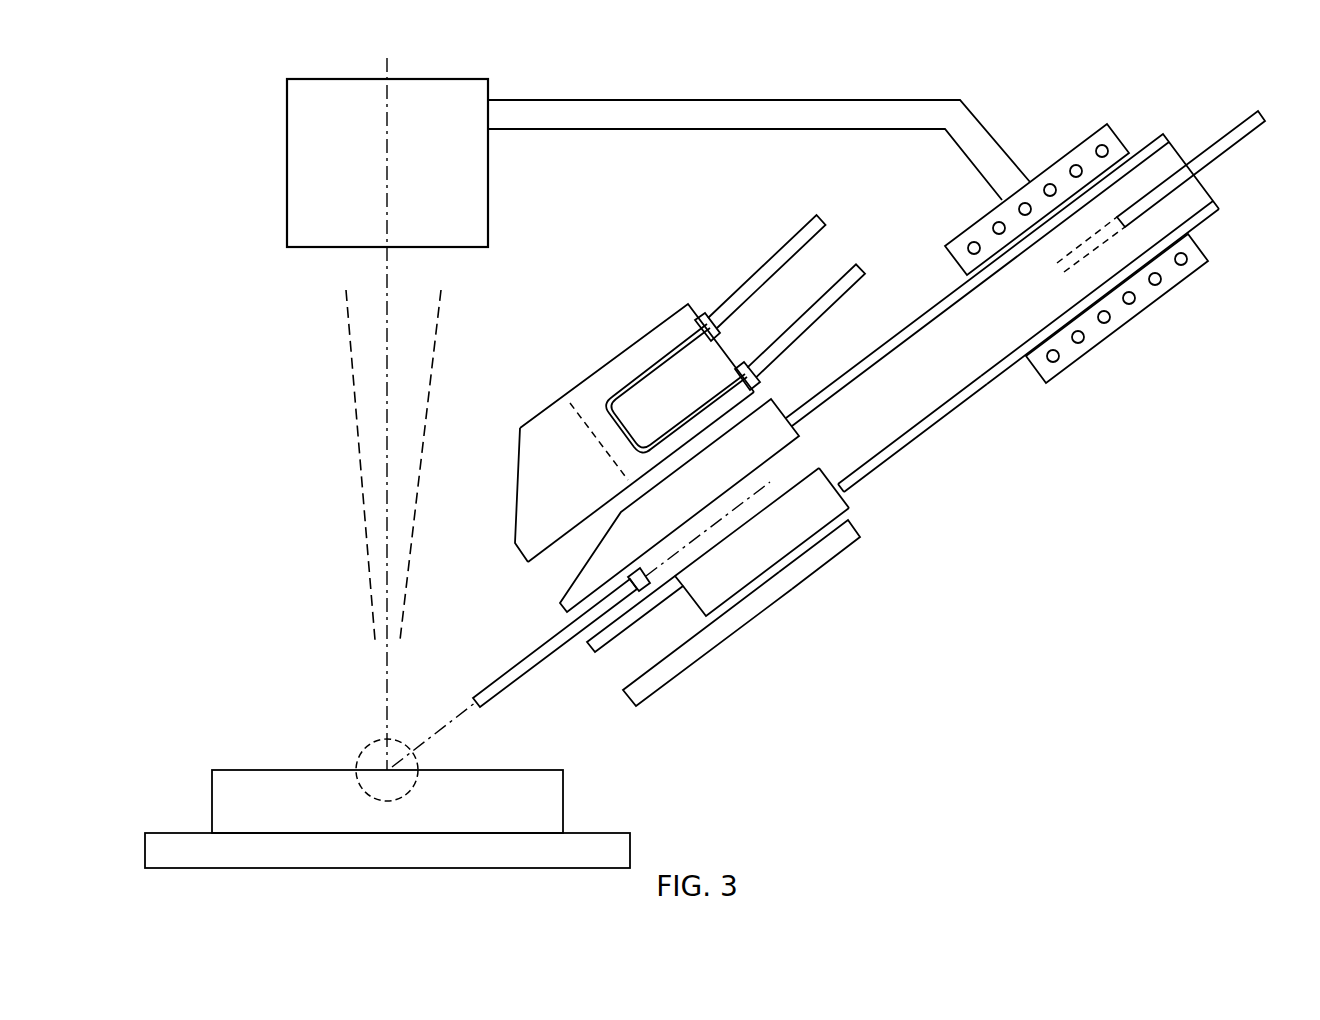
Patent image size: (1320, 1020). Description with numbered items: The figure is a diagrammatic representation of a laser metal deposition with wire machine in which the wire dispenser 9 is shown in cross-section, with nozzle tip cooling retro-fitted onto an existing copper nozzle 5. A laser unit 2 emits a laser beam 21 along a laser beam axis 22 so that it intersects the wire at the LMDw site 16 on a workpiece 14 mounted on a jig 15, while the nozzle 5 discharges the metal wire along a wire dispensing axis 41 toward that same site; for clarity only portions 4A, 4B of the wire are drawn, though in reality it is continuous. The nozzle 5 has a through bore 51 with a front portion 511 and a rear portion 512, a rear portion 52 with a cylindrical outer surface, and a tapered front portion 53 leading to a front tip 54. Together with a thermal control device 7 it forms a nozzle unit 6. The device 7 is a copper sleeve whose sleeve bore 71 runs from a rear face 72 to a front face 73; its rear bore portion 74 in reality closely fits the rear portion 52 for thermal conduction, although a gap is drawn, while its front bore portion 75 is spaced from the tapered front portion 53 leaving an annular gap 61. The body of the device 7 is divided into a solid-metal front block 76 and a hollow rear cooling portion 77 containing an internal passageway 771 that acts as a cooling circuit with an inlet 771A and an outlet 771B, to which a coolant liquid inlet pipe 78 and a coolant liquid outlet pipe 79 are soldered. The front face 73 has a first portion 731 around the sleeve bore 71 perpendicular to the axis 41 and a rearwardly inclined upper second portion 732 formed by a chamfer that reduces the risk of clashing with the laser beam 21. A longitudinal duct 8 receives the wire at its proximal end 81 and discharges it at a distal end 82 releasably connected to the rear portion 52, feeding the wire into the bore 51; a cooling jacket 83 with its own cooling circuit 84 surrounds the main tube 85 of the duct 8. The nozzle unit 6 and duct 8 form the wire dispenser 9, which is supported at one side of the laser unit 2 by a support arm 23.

The laser unit 2 is at (285, 160).
The laser beam 21 is at (355, 395).
The laser beam axis 22 is at (383, 653).
The support arm 23 is at (708, 97).
The workpiece 14 is at (212, 803).
The jig 15 is at (145, 847).
The LMDw site 16 is at (417, 783).
The wire dispensing axis 41 is at (455, 720).
The portion of the wire 4A is at (1240, 135).
The portion of the wire 4B is at (527, 690).
The nozzle unit 6 is at (566, 306).
The thermal control device 7 is at (541, 394).
The sleeve bore 71 is at (535, 552).
The front face 73 is at (515, 550).
The rear bore portion 74 is at (737, 408).
The front bore portion 75 is at (573, 542).
The front block 76 is at (517, 488).
The rear cooling portion 77 is at (625, 352).
The coolant liquid inlet pipe 78 is at (783, 233).
The coolant liquid outlet pipe 79 is at (862, 268).
The second portion of the front face 732 is at (520, 440).
The internal passageway 771 is at (668, 348).
The inlet 771A is at (708, 315).
The outlet 771B is at (748, 366).
The longitudinal duct 8 is at (1103, 360).
The proximal end 81 is at (1212, 203).
The distal end 82 is at (852, 490).
The cooling jacket 83 is at (1150, 318).
The cooling circuit 84 is at (1162, 277).
The main tube 85 is at (987, 386).
The wire dispenser 9 is at (977, 558).
The nozzle 5 is at (775, 522).
The through bore 51 is at (752, 542).
The front portion of the through bore 511 is at (625, 614).
The rear portion of the nozzle 52 is at (830, 548).
The rear portion of the through bore 512 is at (858, 536).
The front portion of the nozzle 53 is at (653, 612).
The front tip 54 is at (589, 650).
The annular gap 61 is at (618, 660).
The rear face 72 is at (860, 527).
The first portion of the front face 731 is at (627, 702).